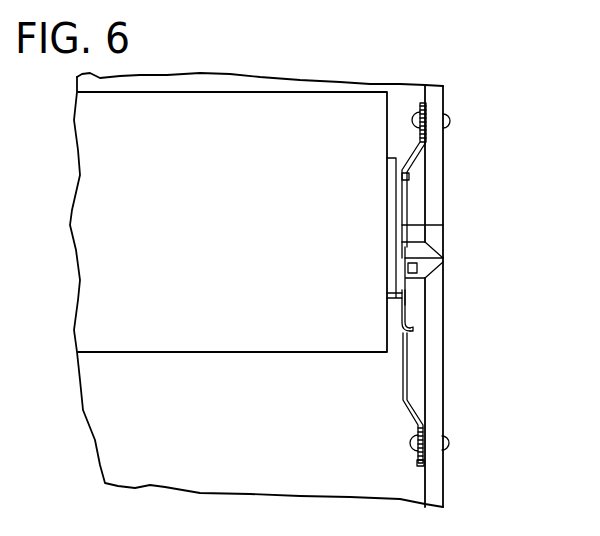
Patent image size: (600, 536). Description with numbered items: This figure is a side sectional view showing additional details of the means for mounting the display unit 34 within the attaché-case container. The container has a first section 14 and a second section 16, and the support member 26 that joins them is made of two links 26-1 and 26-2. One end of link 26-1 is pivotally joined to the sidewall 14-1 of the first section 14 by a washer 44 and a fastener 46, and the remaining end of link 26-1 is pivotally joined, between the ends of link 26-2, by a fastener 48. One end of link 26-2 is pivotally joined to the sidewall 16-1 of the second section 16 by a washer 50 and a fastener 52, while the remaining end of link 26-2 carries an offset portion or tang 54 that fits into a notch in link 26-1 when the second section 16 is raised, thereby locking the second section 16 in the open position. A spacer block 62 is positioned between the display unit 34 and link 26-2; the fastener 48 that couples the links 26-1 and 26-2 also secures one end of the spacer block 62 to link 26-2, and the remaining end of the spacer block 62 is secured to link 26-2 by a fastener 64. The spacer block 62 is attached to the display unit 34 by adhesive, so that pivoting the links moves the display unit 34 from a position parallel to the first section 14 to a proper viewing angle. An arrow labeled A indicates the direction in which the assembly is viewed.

The first section 14 is at (433, 308).
The sidewall of the first section 14-1 is at (435, 412).
The second section 16 is at (442, 95).
The sidewall of the second section 16-1 is at (436, 166).
The support member 26 is at (407, 316).
The link 26-1 is at (405, 372).
The link 26-2 is at (403, 224).
The display unit 34 is at (280, 132).
The washer 44 is at (420, 462).
The fastener 46 is at (450, 444).
The fastener 48 is at (419, 268).
The washer 50 is at (427, 131).
The fastener 52 is at (451, 121).
The tang 54 is at (412, 333).
The spacer block 62 is at (393, 188).
The fastener 64 is at (409, 178).
The direction of view A is at (492, 263).